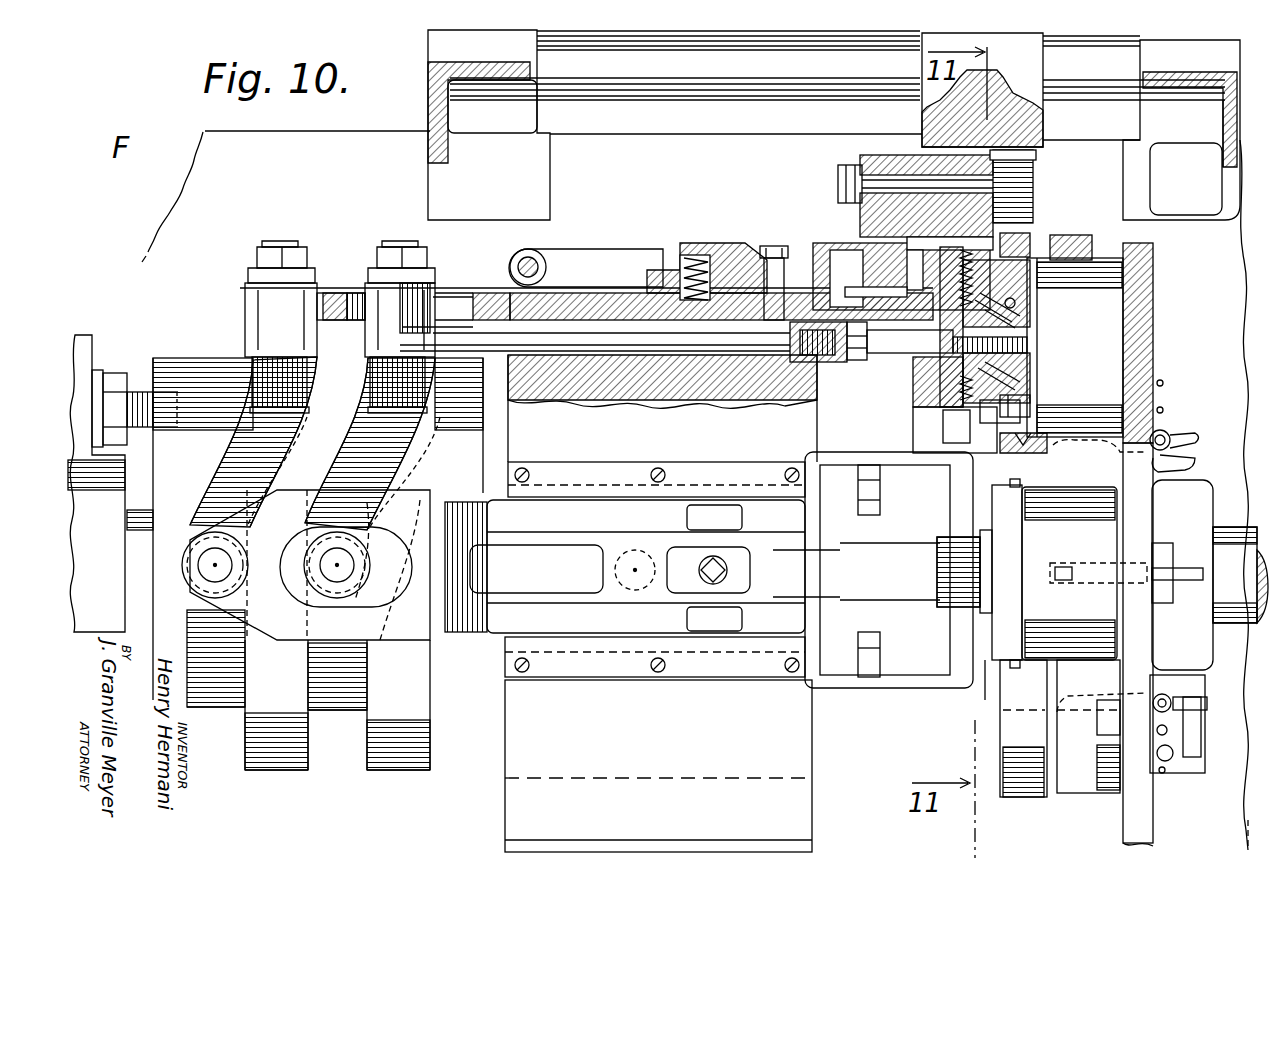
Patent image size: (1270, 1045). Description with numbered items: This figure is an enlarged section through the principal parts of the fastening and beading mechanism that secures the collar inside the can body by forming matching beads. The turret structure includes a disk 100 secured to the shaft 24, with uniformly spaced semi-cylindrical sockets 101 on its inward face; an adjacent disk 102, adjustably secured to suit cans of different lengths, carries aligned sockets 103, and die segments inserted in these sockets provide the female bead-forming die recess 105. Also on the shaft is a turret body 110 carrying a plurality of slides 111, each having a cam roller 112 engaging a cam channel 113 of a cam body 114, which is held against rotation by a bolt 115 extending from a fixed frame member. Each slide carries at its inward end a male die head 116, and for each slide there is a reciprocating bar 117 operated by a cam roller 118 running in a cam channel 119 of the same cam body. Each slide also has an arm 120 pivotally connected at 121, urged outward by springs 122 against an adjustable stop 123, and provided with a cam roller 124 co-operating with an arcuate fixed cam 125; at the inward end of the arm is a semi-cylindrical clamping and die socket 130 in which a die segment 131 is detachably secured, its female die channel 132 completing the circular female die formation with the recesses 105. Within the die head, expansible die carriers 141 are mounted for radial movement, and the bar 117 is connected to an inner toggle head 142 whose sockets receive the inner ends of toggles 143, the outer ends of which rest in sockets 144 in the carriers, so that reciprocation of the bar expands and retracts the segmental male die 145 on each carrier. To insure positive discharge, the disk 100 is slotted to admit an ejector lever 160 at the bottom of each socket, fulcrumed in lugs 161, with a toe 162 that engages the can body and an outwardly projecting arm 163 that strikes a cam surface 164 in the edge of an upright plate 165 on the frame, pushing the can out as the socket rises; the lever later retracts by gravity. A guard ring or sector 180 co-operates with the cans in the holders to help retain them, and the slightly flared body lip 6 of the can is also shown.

The body lip 6 is at (992, 672).
The shaft 24 is at (1228, 535).
The disk 100 is at (1153, 290).
The semi-cylindrical sockets 101 is at (1080, 798).
The disk 102 is at (1018, 798).
The semi-cylindrical sockets 103 is at (1045, 470).
The female bead-forming die recess 105 is at (1018, 440).
The turret body 110 is at (580, 300).
The slides 111 is at (625, 228).
The cam roller 112 is at (258, 340).
The cam channel 113 is at (228, 362).
The cam body 114 is at (185, 392).
The bolt 115 is at (138, 378).
The male die head 116 is at (855, 215).
The reciprocating bar 117 is at (388, 590).
The cam roller 118 is at (380, 372).
The cam channel 119 is at (348, 462).
The arm 120 is at (660, 265).
The pivot 121 is at (540, 258).
The springs 122 is at (694, 262).
The adjustable stop 123 is at (766, 248).
The cam roller 124 is at (1022, 162).
The arcuate fixed cam 125 is at (922, 118).
The clamping and die socket 130 is at (1010, 258).
The die segment 131 is at (1018, 240).
The female die channel 132 is at (1070, 235).
The expansible die carriers 141 is at (1030, 290).
The inner toggle head 142 is at (1030, 340).
The toggles 143 is at (1030, 380).
The sockets 144 is at (1028, 312).
The segmental male die 145 is at (1078, 232).
The ejector lever 160 is at (1172, 455).
The lugs 161 is at (1163, 432).
The toe 162 is at (1040, 440).
The arm 163 is at (1190, 433).
The cam surface 164 is at (1200, 705).
The upright plate 165 is at (1205, 752).
The guard ring 180 is at (1100, 230).